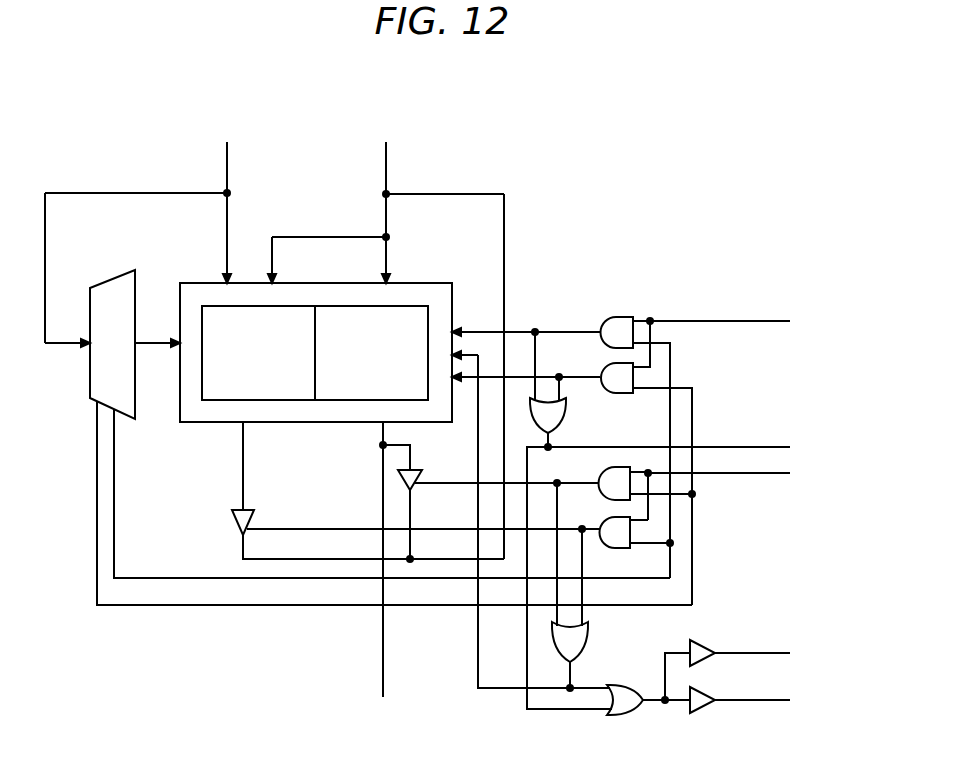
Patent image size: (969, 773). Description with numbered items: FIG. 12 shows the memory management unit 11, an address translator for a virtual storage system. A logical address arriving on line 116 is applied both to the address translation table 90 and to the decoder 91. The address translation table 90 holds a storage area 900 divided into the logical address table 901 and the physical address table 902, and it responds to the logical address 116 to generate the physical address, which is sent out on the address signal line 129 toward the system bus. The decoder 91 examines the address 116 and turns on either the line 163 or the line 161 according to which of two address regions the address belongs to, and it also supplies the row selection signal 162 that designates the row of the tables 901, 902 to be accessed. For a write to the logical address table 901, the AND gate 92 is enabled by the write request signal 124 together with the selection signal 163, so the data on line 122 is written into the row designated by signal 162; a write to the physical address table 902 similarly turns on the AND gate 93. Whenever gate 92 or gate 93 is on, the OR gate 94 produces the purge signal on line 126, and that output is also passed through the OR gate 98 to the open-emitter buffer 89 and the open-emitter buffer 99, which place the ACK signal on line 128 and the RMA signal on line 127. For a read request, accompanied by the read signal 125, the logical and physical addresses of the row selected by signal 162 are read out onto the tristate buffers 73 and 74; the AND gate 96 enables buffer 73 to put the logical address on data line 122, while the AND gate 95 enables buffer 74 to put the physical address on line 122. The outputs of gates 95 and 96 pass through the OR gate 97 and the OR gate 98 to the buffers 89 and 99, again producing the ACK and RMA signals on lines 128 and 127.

The memory unit 11 is at (604, 149).
The logical address line 116 is at (229, 150).
The data signal line 122 is at (388, 155).
The decoder 91 is at (110, 272).
The row selection signal 162 is at (151, 340).
The address translation table 90 is at (221, 426).
The register storage area 900 is at (303, 318).
The logical address table 901 is at (286, 306).
The physical address table 902 is at (410, 306).
The tristate buffer 73 is at (255, 512).
The tristate buffer 74 is at (421, 470).
The address signal line 129 is at (385, 681).
The AND gate 92 is at (617, 317).
The AND gate 93 is at (622, 394).
The OR gate 94 is at (570, 405).
The AND gate 95 is at (597, 470).
The AND gate 96 is at (604, 517).
The OR gate 97 is at (589, 640).
The OR gate 98 is at (616, 718).
The open-emitter buffer 99 is at (698, 640).
The open-emitter buffer 89 is at (696, 714).
The write request signal 124 is at (752, 321).
The READ signal line 125 is at (752, 476).
The purge signal line 126 is at (752, 447).
The RMA signal line 127 is at (750, 653).
The ACK signal line 128 is at (752, 700).
The selection line 161 is at (143, 606).
The logical address table selection signal line 163 is at (170, 577).